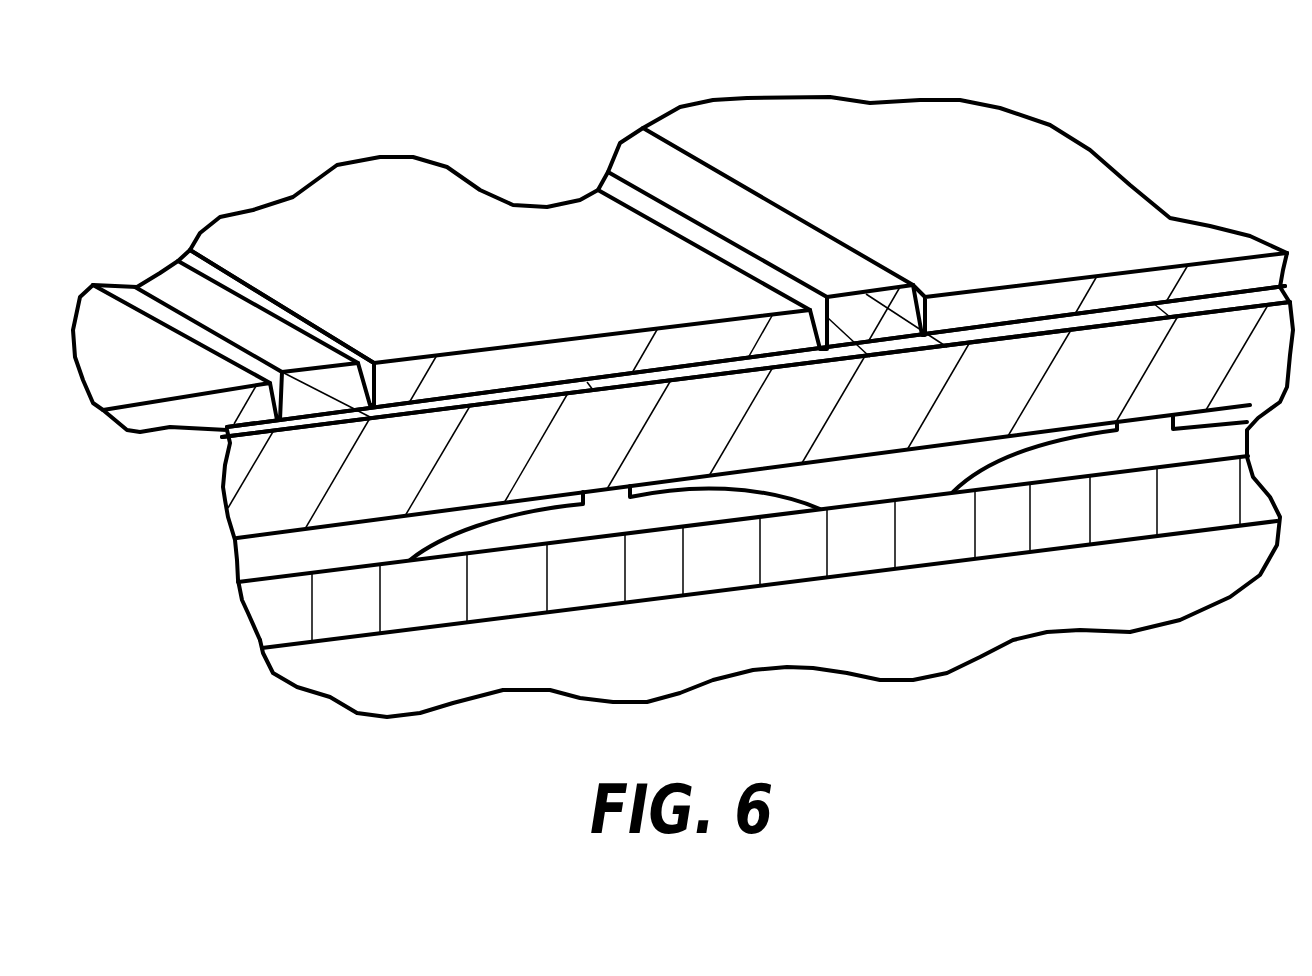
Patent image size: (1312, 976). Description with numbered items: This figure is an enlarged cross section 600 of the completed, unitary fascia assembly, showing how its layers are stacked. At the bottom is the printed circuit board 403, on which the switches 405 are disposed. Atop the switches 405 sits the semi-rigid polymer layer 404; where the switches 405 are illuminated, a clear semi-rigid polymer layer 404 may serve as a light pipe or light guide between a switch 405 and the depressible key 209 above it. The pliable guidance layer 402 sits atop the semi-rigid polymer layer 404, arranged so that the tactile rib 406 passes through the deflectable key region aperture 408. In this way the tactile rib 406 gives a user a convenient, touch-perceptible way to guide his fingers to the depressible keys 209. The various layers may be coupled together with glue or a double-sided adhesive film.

The depressible key 209 is at (390, 240).
The tactile rib 406 is at (713, 197).
The deflectable key region aperture 408 is at (765, 288).
The pliable guidance layer 402 is at (285, 507).
The semi-rigid polymer layer 404 is at (327, 407).
The switches 405 is at (610, 517).
The printed circuit board 403 is at (875, 540).
The enlarged cross section 600 is at (960, 668).